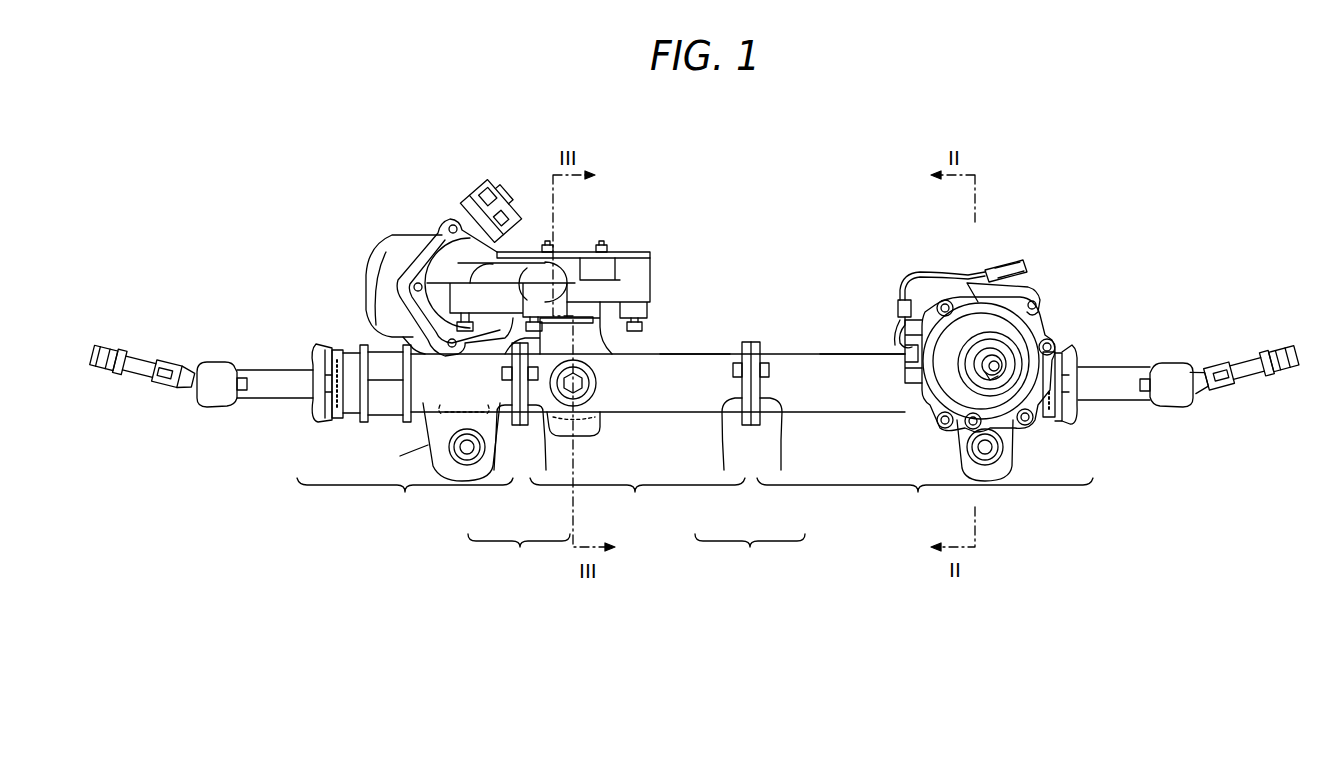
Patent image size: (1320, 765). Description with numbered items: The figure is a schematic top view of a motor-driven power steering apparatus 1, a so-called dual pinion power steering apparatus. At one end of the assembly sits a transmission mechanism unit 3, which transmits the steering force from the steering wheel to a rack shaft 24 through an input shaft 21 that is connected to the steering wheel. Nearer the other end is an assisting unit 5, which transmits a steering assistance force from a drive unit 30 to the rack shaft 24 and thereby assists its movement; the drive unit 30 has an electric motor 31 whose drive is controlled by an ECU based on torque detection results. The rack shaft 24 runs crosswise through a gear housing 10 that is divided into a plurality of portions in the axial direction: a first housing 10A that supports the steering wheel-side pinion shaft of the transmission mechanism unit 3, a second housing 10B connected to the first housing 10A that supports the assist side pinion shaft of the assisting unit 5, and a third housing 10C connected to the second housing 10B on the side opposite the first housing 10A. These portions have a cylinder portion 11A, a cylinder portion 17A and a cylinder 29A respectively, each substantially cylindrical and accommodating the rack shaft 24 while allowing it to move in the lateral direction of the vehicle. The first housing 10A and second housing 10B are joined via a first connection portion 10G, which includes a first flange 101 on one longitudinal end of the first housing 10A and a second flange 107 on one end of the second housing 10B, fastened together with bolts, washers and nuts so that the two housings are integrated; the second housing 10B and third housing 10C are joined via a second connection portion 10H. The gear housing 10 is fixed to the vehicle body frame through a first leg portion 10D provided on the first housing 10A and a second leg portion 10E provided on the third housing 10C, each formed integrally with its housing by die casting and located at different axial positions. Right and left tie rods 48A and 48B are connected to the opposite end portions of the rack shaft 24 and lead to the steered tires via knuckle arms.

The motor-driven power steering apparatus 1 is at (331, 163).
The transmission mechanism unit 3 is at (1064, 291).
The assisting unit 5 is at (668, 257).
The gear housing 10 is at (790, 300).
The first housing 10A is at (925, 501).
The second housing 10B is at (637, 502).
The third housing 10C is at (405, 502).
The first leg portion 10D is at (1013, 450).
The second leg portion 10E is at (422, 452).
The first connection portion 10G is at (750, 557).
The second connection portion 10H is at (519, 557).
The cylinder portion 11A is at (853, 354).
The cylinder portion 17A is at (693, 354).
The input shaft 21 is at (1013, 347).
The rack shaft 24 is at (260, 371).
The cylinder 29A is at (413, 343).
The drive unit 30 is at (405, 228).
The electric motor 31 is at (387, 258).
The tie rod 48A is at (170, 363).
The tie rod 48B is at (1260, 352).
The first flange 101 is at (546, 470).
The second flange 107 is at (494, 470).